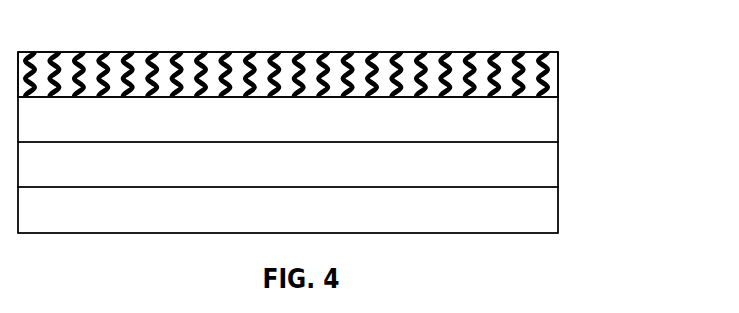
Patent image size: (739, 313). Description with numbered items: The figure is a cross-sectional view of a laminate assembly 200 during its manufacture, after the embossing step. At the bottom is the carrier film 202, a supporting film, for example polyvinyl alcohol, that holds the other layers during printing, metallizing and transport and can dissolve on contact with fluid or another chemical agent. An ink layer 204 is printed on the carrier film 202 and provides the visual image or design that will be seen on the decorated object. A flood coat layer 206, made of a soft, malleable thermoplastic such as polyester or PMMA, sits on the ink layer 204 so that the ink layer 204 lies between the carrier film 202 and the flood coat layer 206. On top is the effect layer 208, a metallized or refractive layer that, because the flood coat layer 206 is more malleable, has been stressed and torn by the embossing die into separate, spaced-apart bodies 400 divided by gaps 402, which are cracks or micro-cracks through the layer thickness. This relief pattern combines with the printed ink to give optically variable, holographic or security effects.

The laminate assembly 200 is at (665, 51).
The carrier film 202 is at (550, 208).
The ink layer 204 is at (550, 164).
The flood coat layer 206 is at (550, 120).
The effect layer 208 is at (582, 52).
The bodies 400 is at (553, 52).
The gaps 402 is at (542, 52).